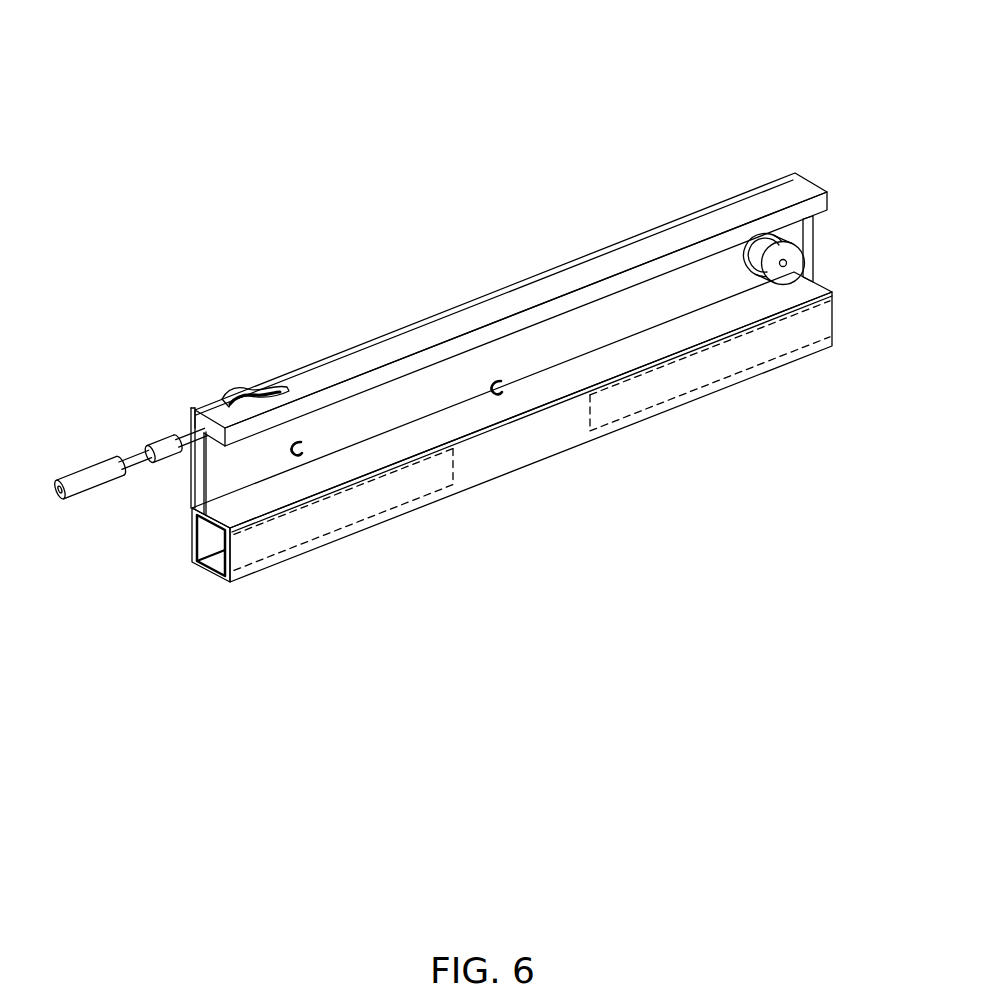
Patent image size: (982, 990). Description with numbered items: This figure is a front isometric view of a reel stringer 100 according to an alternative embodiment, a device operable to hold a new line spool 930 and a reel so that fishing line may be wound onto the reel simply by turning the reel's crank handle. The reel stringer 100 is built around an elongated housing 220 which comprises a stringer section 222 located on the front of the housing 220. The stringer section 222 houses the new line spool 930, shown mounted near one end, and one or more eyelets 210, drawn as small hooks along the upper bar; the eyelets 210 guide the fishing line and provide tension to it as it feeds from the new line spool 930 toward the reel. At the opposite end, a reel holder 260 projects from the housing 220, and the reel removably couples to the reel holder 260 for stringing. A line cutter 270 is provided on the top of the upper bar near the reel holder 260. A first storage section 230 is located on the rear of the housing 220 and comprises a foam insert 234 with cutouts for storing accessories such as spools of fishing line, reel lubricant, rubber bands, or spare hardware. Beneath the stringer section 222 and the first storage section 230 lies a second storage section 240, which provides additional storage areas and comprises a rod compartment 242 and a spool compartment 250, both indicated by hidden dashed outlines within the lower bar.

The reel stringer 100 is at (212, 171).
The eyelets 210 is at (305, 455).
The housing 220 is at (221, 578).
The stringer section 222 is at (855, 168).
The first storage section 230 is at (198, 492).
The foam insert 234 is at (191, 476).
The second storage section 240 is at (855, 281).
The rod compartment 242 is at (301, 545).
The spool compartment 250 is at (736, 378).
The reel holder 260 is at (92, 472).
The line cutter 270 is at (242, 388).
The new line spool 930 is at (781, 261).